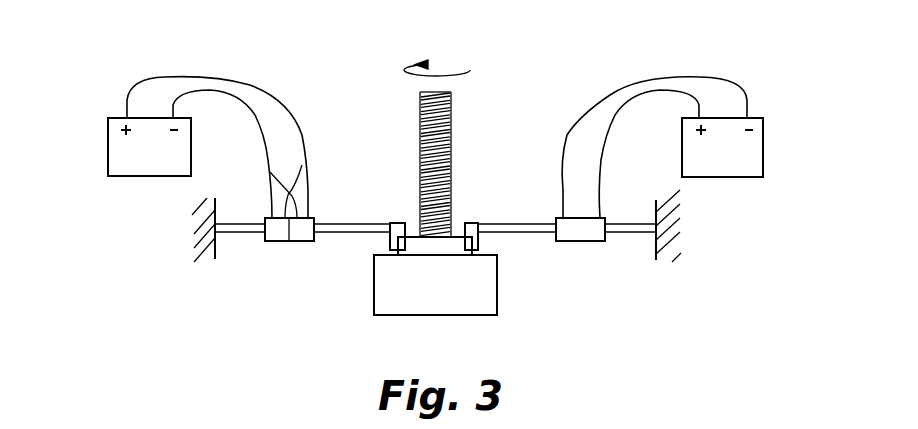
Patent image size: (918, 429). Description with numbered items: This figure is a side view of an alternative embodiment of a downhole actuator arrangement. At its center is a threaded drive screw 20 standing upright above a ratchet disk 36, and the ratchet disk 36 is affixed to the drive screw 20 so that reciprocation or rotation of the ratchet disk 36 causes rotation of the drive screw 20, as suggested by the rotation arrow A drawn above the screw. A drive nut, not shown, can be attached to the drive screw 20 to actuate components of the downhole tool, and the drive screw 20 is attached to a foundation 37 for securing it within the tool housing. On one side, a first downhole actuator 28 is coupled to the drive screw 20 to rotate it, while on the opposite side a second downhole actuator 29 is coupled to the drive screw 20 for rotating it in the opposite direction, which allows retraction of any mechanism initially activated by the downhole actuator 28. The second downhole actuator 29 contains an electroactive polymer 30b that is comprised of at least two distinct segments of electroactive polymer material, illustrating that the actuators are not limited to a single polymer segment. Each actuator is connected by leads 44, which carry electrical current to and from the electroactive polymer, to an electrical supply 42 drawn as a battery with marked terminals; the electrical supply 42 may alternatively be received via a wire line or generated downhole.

The threaded drive screw 20 is at (420, 127).
The rotation direction arrow A is at (470, 70).
The downhole actuator 28 is at (583, 267).
The second downhole actuator 29 is at (291, 267).
The electroactive polymer 30b is at (275, 241).
The ratchet disk 36 is at (433, 247).
The foundation 37 is at (497, 289).
The electrical supply 42 is at (108, 146).
The leads 44 is at (263, 92).